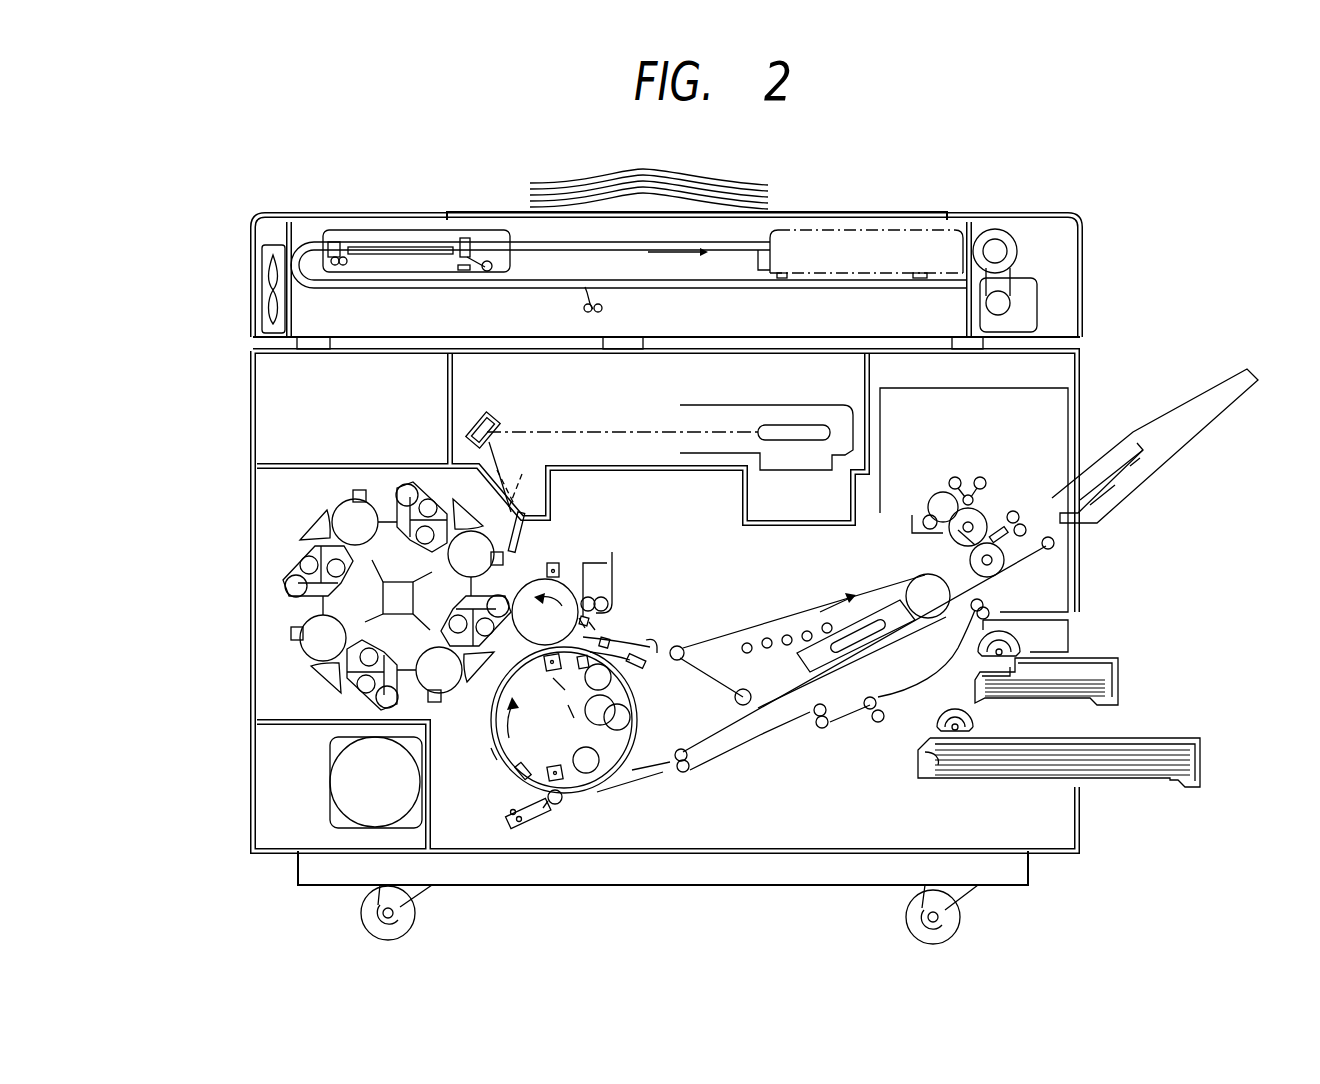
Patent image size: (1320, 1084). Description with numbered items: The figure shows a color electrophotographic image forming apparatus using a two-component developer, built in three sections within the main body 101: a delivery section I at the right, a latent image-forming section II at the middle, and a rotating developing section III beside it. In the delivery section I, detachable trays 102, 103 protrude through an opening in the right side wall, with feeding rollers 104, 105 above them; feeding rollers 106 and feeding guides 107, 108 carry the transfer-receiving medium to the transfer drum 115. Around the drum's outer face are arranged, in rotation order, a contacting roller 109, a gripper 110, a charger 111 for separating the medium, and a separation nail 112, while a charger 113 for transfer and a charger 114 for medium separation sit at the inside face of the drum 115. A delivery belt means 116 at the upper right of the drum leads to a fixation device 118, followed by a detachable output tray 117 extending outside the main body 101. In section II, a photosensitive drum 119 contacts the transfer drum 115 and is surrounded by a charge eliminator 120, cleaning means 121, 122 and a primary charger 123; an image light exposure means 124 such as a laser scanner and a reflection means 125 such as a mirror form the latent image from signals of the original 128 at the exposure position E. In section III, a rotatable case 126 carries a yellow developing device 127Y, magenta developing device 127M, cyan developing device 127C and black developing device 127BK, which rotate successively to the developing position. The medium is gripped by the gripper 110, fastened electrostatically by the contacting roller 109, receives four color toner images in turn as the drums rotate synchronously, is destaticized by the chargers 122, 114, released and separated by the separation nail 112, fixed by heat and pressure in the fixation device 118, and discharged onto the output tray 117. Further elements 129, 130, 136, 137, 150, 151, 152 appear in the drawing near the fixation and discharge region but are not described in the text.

The main body 101 is at (1097, 292).
The tray 102 is at (1177, 737).
The tray 103 is at (1118, 684).
The feeding roller 104 is at (926, 742).
The feeding roller 105 is at (1071, 648).
The feeding rollers 106 is at (690, 772).
The feeding guide 107 is at (746, 740).
The feeding guide 108 is at (636, 778).
The contacting roller 109 is at (548, 806).
The gripper 110 is at (513, 778).
The charger for separating the transfer-receiving medium 111 is at (612, 640).
The separation nail 112 is at (639, 664).
The charger for transfer 113 is at (564, 720).
The charger for transfer-receiving medium separation 114 is at (590, 688).
The transfer drum 115 is at (491, 750).
The delivery belt means 116 is at (720, 629).
The output tray 117 is at (1185, 412).
The fixation device 118 is at (983, 508).
The photosensitive drum 119 is at (567, 578).
The charge eliminator 120 is at (600, 620).
The cleaning means 121 is at (610, 580).
The cleaning means 122 is at (595, 628).
The primary charger 123 is at (553, 561).
The image light exposure means 124 is at (751, 420).
The image exposure light reflection means 125 is at (490, 413).
The rotatable case 126 is at (372, 597).
The black developing device 127BK is at (347, 512).
The yellow developing device 127Y is at (427, 580).
The cyan developing device 127C is at (317, 637).
The magenta developing device 127M is at (410, 684).
The original 128 is at (783, 187).
The fixing roller 129 is at (955, 541).
The pressure roller 130 is at (970, 562).
The separation claw 136 is at (987, 520).
The discharge roller 137 is at (1005, 558).
The discharge roller 150 is at (1056, 545).
The discharge guide 151 is at (1030, 571).
The cleaning rollers 152 is at (1015, 519).
The delivery section I is at (792, 780).
The latent image-forming section II is at (576, 418).
The developing section III is at (280, 560).
The exposure position E is at (512, 474).